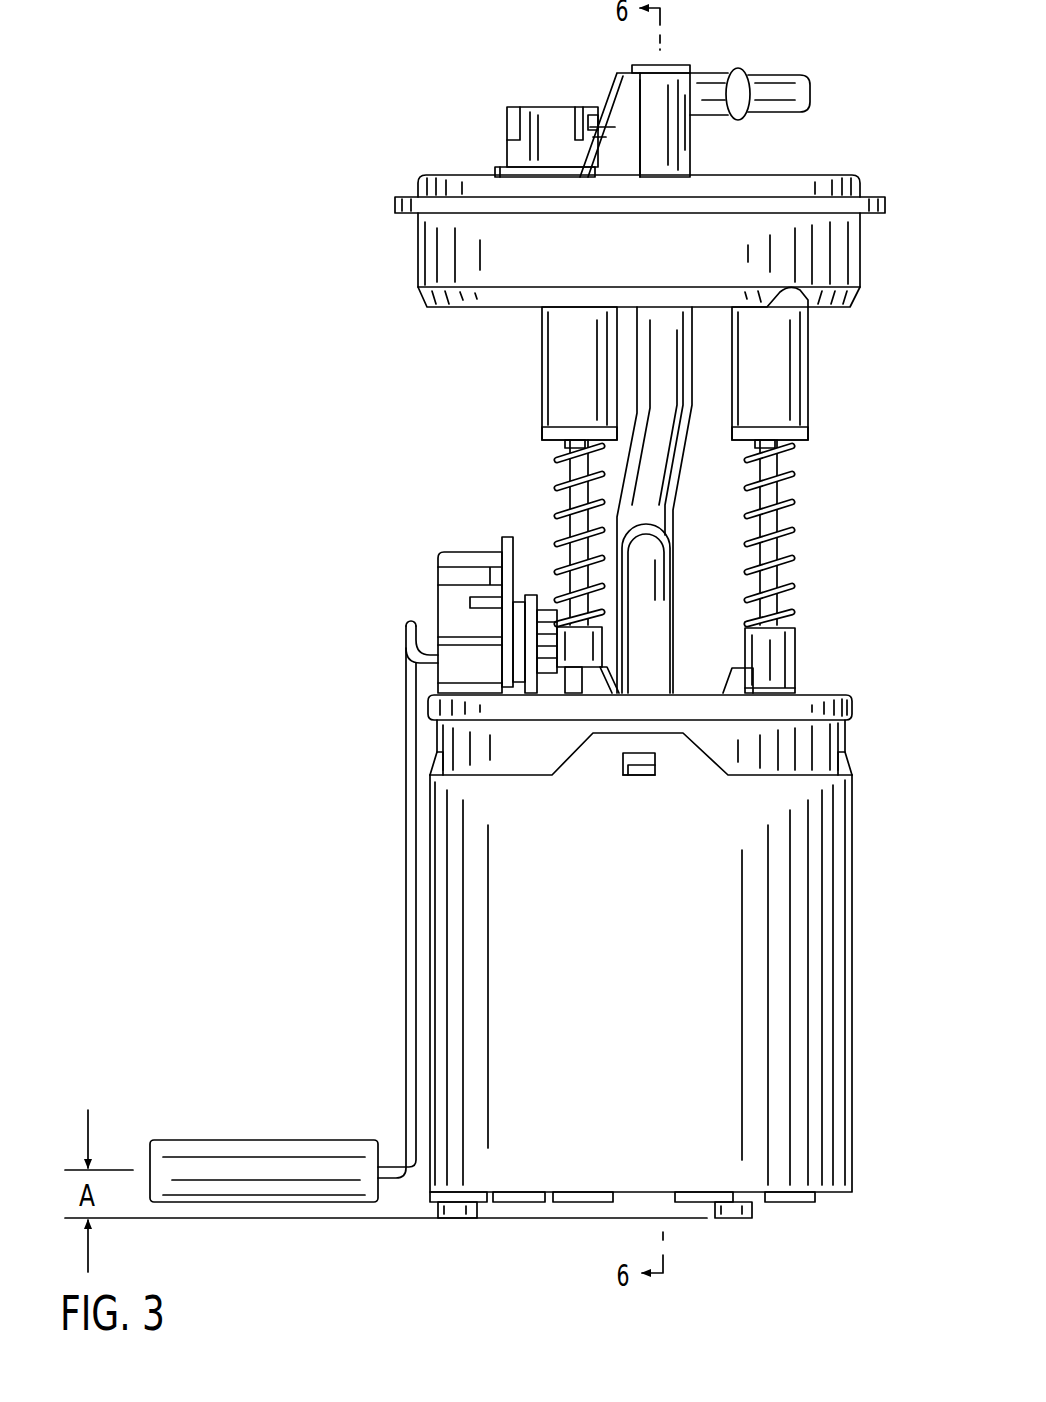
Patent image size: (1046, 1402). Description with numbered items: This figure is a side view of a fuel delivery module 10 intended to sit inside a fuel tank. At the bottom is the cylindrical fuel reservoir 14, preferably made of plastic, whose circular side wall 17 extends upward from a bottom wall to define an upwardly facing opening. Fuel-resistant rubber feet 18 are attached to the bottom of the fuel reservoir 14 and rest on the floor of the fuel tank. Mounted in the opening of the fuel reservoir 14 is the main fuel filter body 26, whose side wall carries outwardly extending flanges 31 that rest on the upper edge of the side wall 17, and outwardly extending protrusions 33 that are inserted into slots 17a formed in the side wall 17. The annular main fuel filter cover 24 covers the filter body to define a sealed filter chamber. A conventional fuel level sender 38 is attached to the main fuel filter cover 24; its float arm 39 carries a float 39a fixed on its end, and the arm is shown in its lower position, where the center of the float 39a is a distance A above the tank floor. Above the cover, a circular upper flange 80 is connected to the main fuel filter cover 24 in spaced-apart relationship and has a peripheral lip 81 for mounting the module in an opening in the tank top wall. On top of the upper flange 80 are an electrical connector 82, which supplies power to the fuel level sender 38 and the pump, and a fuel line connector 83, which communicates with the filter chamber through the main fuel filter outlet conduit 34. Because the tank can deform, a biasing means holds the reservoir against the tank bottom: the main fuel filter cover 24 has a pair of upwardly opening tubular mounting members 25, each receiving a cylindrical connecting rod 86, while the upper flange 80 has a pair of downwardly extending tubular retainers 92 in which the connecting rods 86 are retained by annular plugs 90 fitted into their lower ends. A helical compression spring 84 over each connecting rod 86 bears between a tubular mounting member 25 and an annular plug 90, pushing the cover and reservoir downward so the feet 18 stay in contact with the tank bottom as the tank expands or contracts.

The fuel delivery module 10 is at (280, 670).
The fuel reservoir 14 is at (835, 1026).
The side wall 17 is at (853, 978).
The slots 17a is at (655, 762).
The feet 18 is at (740, 1226).
The main fuel filter cover 24 is at (848, 695).
The tubular mounting members 25 is at (790, 643).
The main fuel filter body 26 is at (838, 733).
The outwardly extending flanges 31 is at (851, 752).
The outwardly extending protrusions 33 is at (628, 777).
The main fuel filter outlet conduit 34 is at (672, 472).
The fuel level sender 38 is at (447, 530).
The float arm 39 is at (406, 878).
The float 39a is at (220, 1148).
The upper flange 80 is at (846, 165).
The lip 81 is at (395, 207).
The electrical connector 82 is at (553, 90).
The fuel line connector 83 is at (706, 55).
The helical compression spring 84 is at (780, 533).
The connecting rod 86 is at (778, 493).
The annular plugs 90 is at (545, 432).
The tubular retainers 92 is at (552, 368).